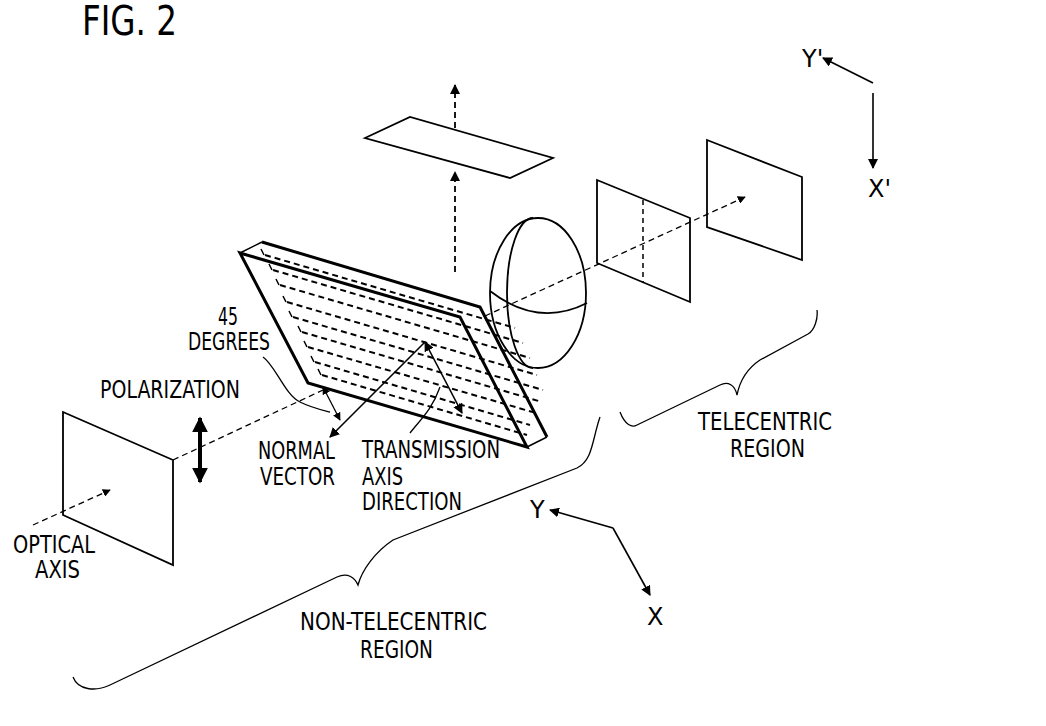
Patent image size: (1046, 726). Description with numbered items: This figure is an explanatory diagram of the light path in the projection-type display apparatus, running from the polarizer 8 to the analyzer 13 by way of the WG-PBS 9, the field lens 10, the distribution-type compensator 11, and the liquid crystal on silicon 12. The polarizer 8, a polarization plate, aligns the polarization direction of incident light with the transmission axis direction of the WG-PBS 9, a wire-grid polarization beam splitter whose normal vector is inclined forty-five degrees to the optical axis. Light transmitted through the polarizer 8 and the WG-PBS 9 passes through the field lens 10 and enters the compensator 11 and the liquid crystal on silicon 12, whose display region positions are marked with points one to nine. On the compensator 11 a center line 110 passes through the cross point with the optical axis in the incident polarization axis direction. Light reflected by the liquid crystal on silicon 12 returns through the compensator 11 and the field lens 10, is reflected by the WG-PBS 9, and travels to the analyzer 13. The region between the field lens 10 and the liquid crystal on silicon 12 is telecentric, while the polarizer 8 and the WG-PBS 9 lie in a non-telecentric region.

The polarizer 8 is at (155, 558).
The WG-PBS 9 is at (270, 240).
The field lens 10 is at (568, 350).
The distribution-type compensator 11 is at (670, 297).
The center line 110 is at (643, 287).
The liquid crystal on silicon 12 is at (787, 260).
The analyzer 13 is at (380, 130).